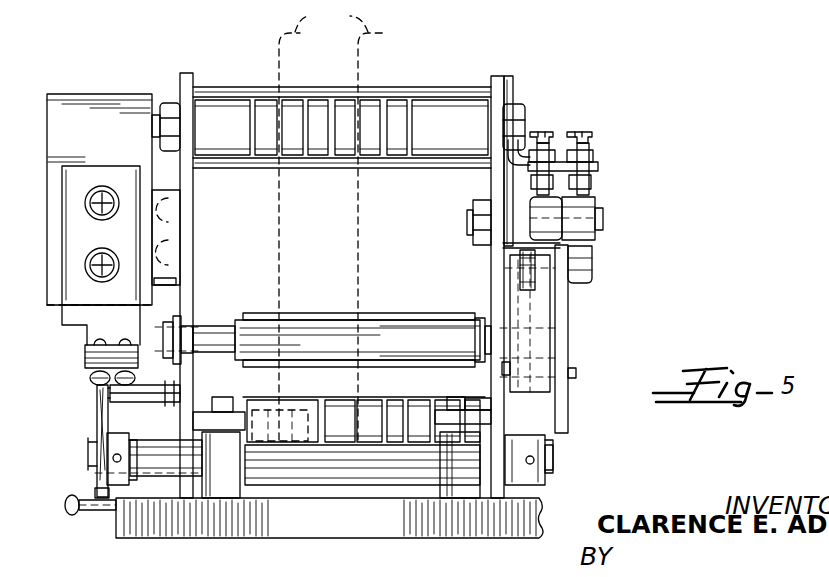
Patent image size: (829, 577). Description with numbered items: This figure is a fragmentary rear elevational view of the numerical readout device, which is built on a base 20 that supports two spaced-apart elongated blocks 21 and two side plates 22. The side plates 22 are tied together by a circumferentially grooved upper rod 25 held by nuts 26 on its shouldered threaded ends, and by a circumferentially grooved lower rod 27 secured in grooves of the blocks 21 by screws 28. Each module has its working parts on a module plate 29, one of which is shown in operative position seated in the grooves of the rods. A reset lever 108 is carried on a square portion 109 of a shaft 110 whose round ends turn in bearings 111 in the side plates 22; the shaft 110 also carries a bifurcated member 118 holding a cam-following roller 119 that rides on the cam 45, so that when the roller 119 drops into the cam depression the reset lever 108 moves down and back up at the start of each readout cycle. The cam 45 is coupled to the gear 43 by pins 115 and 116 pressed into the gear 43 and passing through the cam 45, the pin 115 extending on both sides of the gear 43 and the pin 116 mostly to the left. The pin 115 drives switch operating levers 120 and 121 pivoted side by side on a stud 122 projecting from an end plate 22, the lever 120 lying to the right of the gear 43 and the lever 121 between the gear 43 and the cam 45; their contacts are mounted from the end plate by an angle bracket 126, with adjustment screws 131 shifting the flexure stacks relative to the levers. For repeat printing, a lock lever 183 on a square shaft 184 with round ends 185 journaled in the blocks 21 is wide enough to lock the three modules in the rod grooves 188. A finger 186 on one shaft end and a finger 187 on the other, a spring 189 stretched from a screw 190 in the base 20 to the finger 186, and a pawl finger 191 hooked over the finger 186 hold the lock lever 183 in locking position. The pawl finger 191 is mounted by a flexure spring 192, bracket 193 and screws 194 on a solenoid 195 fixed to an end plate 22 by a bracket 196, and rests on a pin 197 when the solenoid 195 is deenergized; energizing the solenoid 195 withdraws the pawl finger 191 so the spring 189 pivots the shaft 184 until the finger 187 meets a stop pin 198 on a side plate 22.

The base 20 is at (295, 535).
The elongated blocks 21 is at (232, 490).
The side plates 22 is at (190, 78).
The upper rod 25 is at (318, 142).
The nuts 26 is at (167, 104).
The lower rod 27 is at (376, 394).
The screws 28 is at (236, 384).
The module plate 29 is at (332, 222).
The gear 43 is at (568, 418).
The cam 45 is at (520, 366).
The reset lever 108 is at (400, 320).
The square portion 109 is at (312, 332).
The shaft 110 is at (223, 326).
The bearings 111 is at (185, 326).
The pin 115 is at (582, 284).
The pin 116 is at (576, 372).
The bifurcated member 118 is at (545, 385).
The cam-following roller 119 is at (531, 282).
The switch operating lever 120 is at (585, 222).
The switch operating lever 121 is at (560, 218).
The stud 122 is at (476, 215).
The angle bracket 126 is at (598, 170).
The adjustment screws 131 is at (582, 128).
The lock lever 183 is at (290, 410).
The square shaft 184 is at (375, 470).
The round ends 185 is at (160, 487).
The finger 186 is at (102, 418).
The finger 187 is at (548, 452).
The rod grooves 188 is at (300, 127).
The spring 189 is at (95, 494).
The screw 190 is at (75, 516).
The pawl finger 191 is at (98, 392).
The flexure spring 192 is at (87, 354).
The bracket 193 is at (138, 321).
The screws 194 is at (90, 380).
The solenoid 195 is at (103, 100).
The bracket 196 is at (162, 246).
The pin 197 is at (148, 410).
The stop pin 198 is at (480, 398).